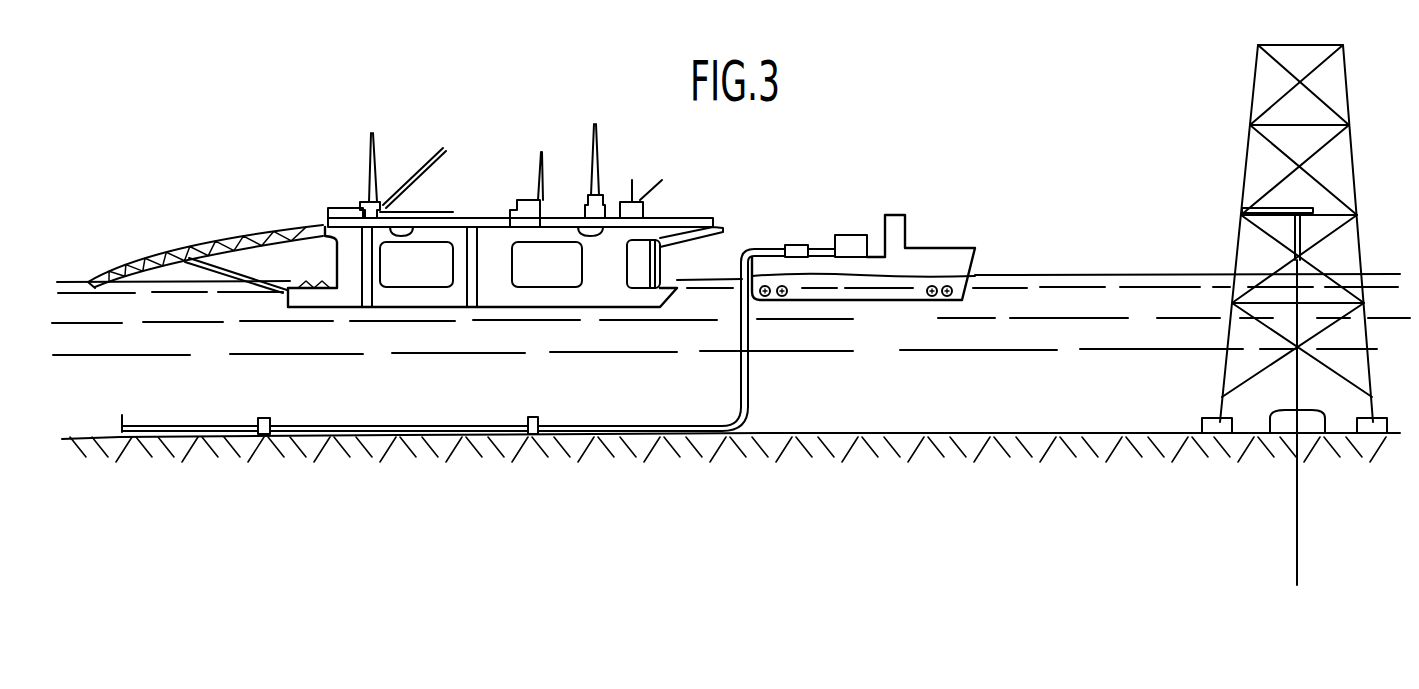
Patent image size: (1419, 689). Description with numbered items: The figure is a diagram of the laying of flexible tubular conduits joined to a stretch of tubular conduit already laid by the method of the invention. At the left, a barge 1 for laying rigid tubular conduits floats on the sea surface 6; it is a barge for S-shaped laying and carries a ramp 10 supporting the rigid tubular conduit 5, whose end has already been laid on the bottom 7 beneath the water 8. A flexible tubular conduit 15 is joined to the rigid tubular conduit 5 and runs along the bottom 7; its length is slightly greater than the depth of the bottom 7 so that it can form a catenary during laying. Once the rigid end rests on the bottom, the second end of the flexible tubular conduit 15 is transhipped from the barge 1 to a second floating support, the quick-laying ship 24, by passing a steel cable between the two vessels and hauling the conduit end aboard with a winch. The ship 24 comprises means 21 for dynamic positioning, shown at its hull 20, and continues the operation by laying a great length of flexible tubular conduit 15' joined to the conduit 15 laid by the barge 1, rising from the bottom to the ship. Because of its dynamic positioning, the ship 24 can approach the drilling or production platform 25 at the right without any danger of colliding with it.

The barge 1 is at (566, 314).
The rigid tubular conduit 5 is at (223, 427).
The sea surface 6 is at (82, 284).
The bottom 7 is at (1118, 433).
The sea water 8 is at (1065, 385).
The ramp 10 is at (264, 228).
The flexible tubular conduit 15 is at (509, 394).
The flexible tubular conduit 15' is at (757, 324).
The hull of auxiliary vessel 20 is at (870, 301).
The means for dynamic positioning 21 is at (773, 302).
The quick-laying ship 24 is at (922, 232).
The drilling or production platform 25 is at (1232, 163).